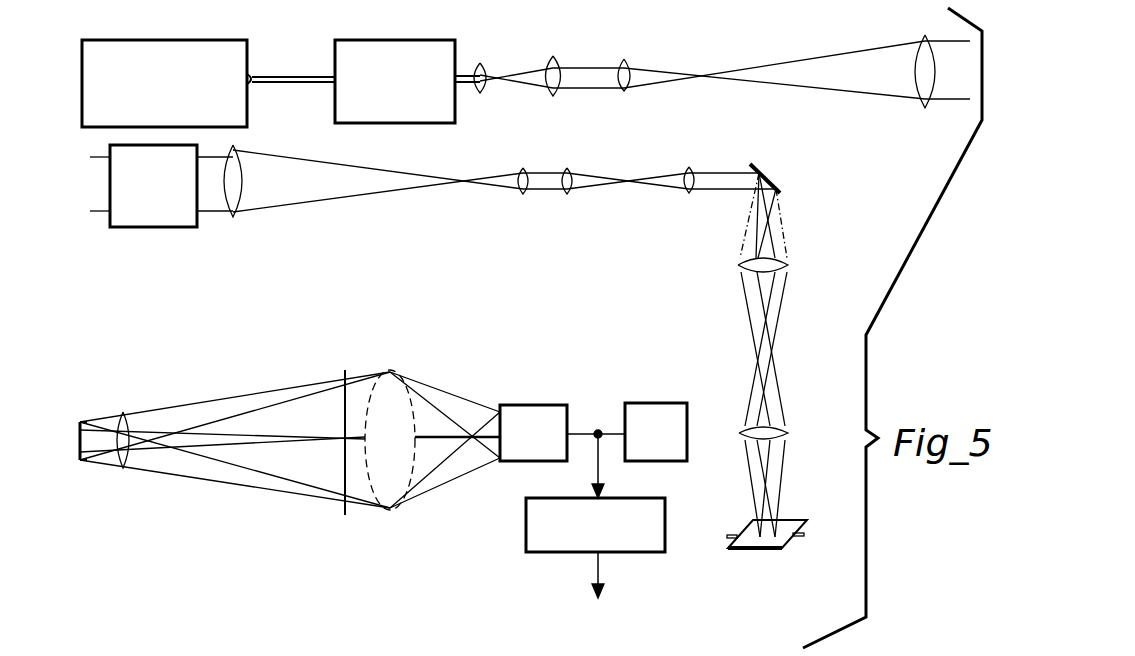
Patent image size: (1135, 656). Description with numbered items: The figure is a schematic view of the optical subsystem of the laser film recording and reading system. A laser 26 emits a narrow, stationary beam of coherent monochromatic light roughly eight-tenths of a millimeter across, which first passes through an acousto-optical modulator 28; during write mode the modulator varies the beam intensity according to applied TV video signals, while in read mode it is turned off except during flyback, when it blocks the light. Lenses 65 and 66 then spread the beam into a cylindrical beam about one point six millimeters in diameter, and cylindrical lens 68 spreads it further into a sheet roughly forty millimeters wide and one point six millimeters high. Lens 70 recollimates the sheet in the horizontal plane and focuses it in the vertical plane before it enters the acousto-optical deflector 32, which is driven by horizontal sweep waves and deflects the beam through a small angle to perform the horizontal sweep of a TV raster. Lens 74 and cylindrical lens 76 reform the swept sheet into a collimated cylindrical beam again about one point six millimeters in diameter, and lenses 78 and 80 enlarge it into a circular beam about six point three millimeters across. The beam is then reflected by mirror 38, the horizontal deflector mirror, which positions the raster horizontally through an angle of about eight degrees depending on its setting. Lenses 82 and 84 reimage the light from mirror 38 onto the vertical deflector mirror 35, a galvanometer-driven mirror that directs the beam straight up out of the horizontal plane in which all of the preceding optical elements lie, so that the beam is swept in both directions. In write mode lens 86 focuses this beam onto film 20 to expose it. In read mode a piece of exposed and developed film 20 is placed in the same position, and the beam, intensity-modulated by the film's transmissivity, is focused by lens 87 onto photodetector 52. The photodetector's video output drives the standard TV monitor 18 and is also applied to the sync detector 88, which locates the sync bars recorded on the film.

The laser 26 is at (233, 40).
The acousto-optical modulator 28 is at (398, 40).
The lens 65 is at (480, 63).
The lens 66 is at (553, 57).
The cylindrical lens 68 is at (624, 59).
The lens 70 is at (920, 38).
The acousto-optical deflector 32 is at (163, 228).
The lens 74 is at (237, 218).
The cylindrical lens 76 is at (522, 194).
The lens 78 is at (565, 194).
The lens 80 is at (688, 194).
The mirror 38 is at (778, 172).
The lens 82 is at (789, 265).
The lens 84 is at (788, 432).
The vertical deflector mirror 35 is at (800, 520).
The lens 86 is at (125, 468).
The film 20 is at (345, 497).
The lens 87 is at (390, 372).
The photodetector 52 is at (548, 405).
The TV monitor 18 is at (677, 403).
The sync detector 88 is at (526, 545).